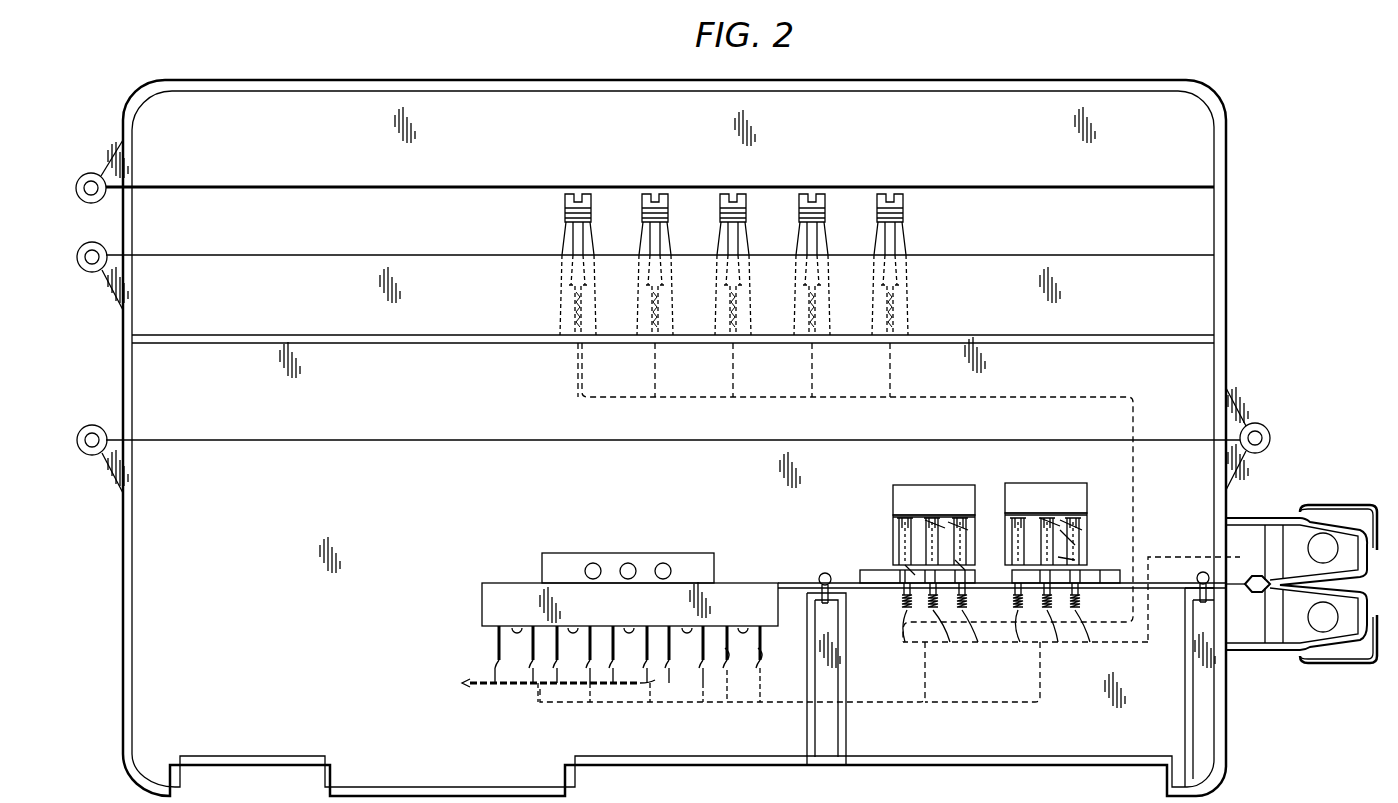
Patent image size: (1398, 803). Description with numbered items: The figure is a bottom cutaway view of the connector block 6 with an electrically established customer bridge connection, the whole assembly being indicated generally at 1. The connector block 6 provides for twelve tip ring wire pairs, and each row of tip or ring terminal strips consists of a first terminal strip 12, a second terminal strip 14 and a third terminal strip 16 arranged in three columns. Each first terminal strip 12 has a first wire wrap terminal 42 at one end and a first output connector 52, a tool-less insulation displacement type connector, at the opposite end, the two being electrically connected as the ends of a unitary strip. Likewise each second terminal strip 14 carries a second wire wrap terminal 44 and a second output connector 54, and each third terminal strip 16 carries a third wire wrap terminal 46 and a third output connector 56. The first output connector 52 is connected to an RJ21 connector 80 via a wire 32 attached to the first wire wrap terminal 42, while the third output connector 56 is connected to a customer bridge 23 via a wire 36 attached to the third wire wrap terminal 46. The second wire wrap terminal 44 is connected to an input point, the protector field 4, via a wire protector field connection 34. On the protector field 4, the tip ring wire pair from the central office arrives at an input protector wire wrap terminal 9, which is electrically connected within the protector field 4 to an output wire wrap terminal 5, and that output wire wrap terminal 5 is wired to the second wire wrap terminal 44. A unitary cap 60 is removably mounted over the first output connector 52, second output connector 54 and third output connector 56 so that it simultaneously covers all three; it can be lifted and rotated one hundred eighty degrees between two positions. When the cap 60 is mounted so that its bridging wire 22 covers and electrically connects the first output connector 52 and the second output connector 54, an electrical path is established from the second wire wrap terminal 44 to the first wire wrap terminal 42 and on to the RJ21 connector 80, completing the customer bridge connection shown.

The electric connection box 1 is at (906, 75).
The protector field 4 is at (745, 598).
The output wire wrap terminal 5 is at (611, 664).
The connector block 6 is at (832, 576).
The input protector wire wrap terminal 9 is at (743, 674).
The first terminal strip 12 is at (898, 558).
The second terminal strip 14 is at (1075, 545).
The third terminal strip 16 is at (1075, 560).
The bridging wire 22 is at (1063, 513).
The customer bridge 23 is at (903, 200).
The wire 32 is at (1186, 556).
The wire protector field connection 34 is at (870, 703).
The wire 36 is at (1138, 420).
The first wire wrap terminal 42 is at (903, 612).
The second wire wrap terminal 44 is at (950, 643).
The third wire wrap terminal 46 is at (978, 643).
The first output connector 52 is at (897, 522).
The second output connector 54 is at (925, 515).
The third output connector 56 is at (960, 515).
The unitary cap 60 is at (893, 492).
The RJ21 connector 80 is at (1250, 632).